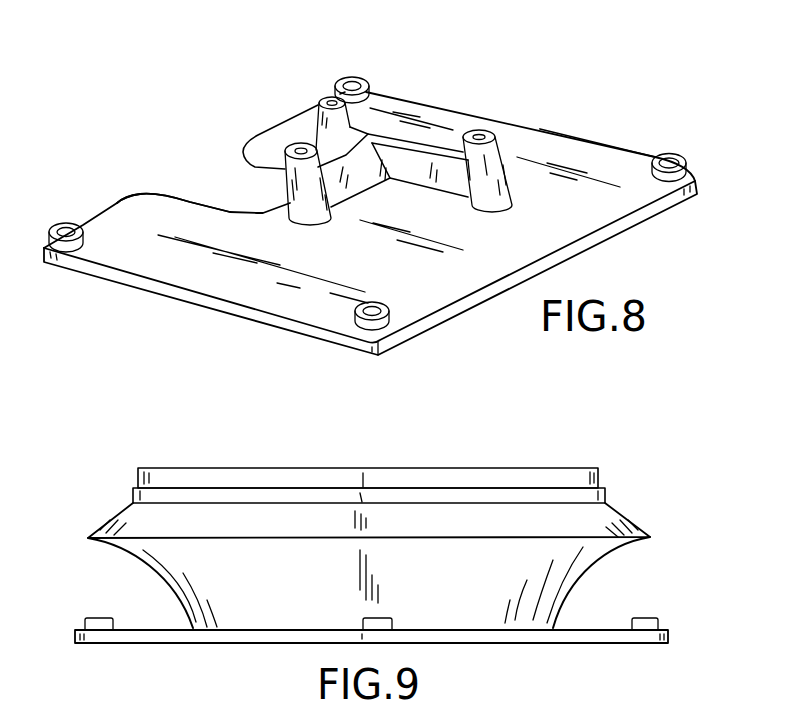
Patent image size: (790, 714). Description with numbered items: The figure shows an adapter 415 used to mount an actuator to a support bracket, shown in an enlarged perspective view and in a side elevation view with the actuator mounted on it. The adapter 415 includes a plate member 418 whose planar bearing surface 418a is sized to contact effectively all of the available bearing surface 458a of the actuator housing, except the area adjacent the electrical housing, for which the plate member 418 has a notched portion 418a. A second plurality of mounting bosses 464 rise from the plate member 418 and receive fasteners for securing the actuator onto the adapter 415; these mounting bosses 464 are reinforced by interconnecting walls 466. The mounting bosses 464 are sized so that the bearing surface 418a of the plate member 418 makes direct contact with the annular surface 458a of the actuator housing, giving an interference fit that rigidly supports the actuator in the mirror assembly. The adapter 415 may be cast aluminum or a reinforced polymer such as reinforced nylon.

In FIG. 8, the adapter 415 is at (509, 82).
In FIG. 8, the plate member 418 is at (353, 77).
In FIG. 8, the planar bearing surface 418a is at (207, 203).
In FIG. 8, the mounting bosses 464 is at (320, 98).
In FIG. 8, the interconnecting walls 466 is at (392, 128).
In FIG. 9, the bearing surface 458a is at (290, 644).